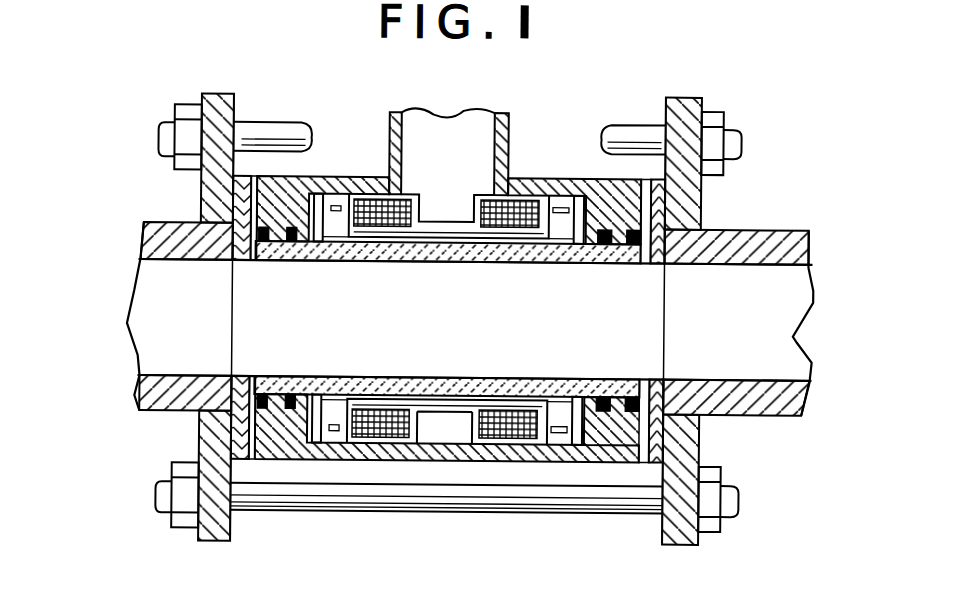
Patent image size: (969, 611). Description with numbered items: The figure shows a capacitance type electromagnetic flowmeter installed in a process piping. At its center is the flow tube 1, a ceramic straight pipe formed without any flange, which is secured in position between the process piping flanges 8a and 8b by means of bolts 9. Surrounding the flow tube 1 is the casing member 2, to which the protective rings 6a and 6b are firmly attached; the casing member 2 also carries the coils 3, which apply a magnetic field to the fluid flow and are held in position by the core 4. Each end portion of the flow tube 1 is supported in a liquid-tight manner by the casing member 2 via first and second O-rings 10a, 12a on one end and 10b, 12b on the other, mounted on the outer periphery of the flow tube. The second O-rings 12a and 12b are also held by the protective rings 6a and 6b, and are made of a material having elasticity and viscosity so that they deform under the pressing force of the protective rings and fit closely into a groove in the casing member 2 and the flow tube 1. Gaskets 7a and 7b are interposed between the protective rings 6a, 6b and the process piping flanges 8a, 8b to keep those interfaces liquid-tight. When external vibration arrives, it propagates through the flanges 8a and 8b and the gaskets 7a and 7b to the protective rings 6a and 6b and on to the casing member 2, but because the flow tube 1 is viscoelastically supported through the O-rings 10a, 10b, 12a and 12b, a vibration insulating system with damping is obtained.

The flow tube 1 is at (560, 253).
The casing member 2 is at (600, 188).
The coils 3 is at (384, 205).
The core 4 is at (435, 170).
The protective ring 6a is at (648, 463).
The protective ring 6b is at (245, 463).
The gasket 7a is at (658, 434).
The gasket 7b is at (228, 436).
The process piping flange 8a is at (692, 105).
The process piping flange 8b is at (221, 99).
The bolts 9 is at (287, 128).
The first O-ring 10a is at (603, 412).
The first O-ring 10b is at (293, 400).
The second O-ring 12a is at (630, 407).
The second O-ring 12b is at (263, 398).